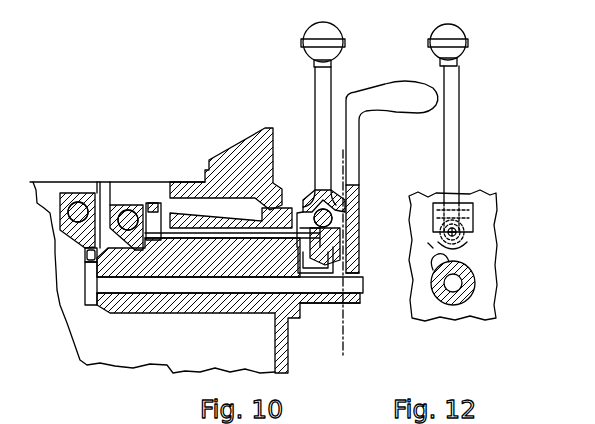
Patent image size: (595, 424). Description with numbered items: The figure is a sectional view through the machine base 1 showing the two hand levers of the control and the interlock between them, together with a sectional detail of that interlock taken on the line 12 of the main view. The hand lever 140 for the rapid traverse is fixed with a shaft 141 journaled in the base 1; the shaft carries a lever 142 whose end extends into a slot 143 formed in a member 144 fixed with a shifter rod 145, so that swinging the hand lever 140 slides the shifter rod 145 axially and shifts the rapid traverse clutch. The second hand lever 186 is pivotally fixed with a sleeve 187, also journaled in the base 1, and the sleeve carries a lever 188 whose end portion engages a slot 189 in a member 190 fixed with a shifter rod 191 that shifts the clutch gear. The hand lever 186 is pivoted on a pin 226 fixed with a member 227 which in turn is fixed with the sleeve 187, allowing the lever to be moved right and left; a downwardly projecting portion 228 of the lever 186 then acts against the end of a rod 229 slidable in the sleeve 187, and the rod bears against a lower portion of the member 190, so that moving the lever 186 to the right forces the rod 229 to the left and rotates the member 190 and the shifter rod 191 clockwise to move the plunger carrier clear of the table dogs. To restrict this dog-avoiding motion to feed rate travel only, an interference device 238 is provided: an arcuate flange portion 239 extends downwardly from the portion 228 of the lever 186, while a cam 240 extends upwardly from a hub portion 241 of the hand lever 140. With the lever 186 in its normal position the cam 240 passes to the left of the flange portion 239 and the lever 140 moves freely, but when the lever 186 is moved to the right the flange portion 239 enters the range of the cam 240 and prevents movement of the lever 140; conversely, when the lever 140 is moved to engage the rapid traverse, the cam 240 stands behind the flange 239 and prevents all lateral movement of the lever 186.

In FIG. 10, the base 1 is at (275, 343).
In FIG. 10, the section line 12— 12 is at (342, 148).
In FIG. 12, the section line 12— 12 is at (453, 157).
In FIG. 10, the hand lever 140 is at (380, 90).
In FIG. 10, the shaft 141 is at (205, 283).
In FIG. 10, the lever 142 is at (85, 287).
In FIG. 10, the slot 143 is at (83, 257).
In FIG. 10, the member 144 is at (62, 230).
In FIG. 10, the shifter rod 145 is at (58, 208).
In FIG. 10, the hand lever 186 is at (329, 37).
In FIG. 12, the hand lever 186 is at (448, 45).
In FIG. 10, the sleeve 187 is at (297, 213).
In FIG. 10, the lever 188 is at (161, 214).
In FIG. 10, the slot 189 is at (148, 205).
In FIG. 10, the member 190 is at (116, 207).
In FIG. 10, the shifter rod 191 is at (110, 215).
In FIG. 10, the pin 226 is at (323, 202).
In FIG. 10, the member 227 is at (313, 198).
In FIG. 10, the downwardly projecting portion 228 is at (338, 233).
In FIG. 10, the rod 229 is at (190, 222).
In FIG. 10, the interference device 238 is at (425, 237).
In FIG. 12, the arcuate flange portion 239 is at (468, 238).
In FIG. 10, the cam 240 is at (328, 307).
In FIG. 12, the cam 240 is at (427, 262).
In FIG. 10, the hub portion 241 is at (356, 306).